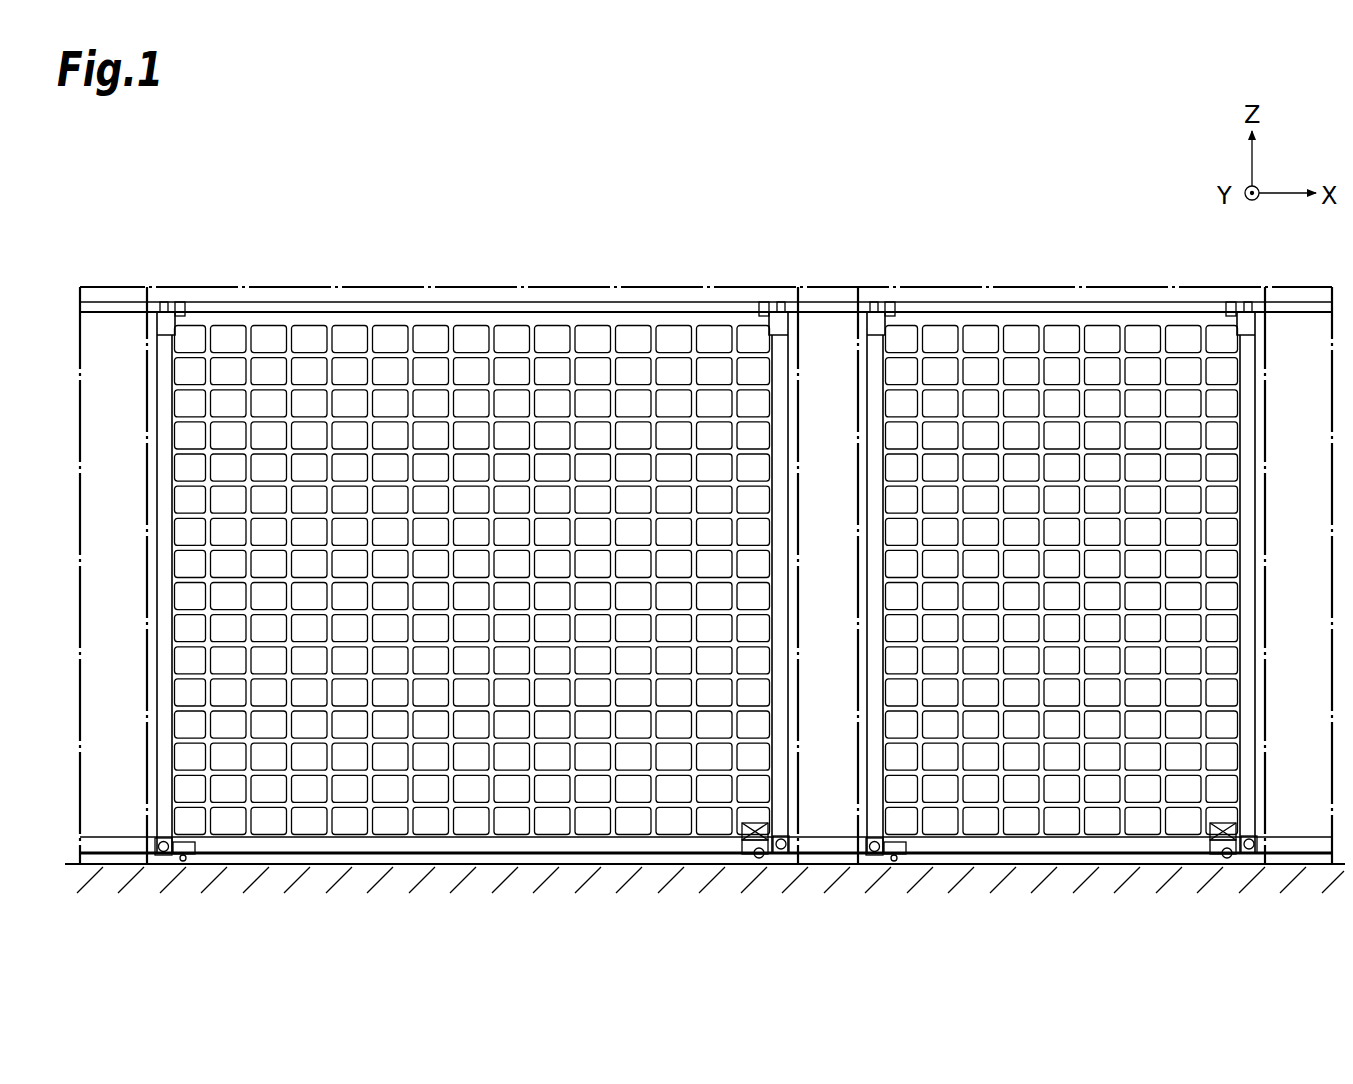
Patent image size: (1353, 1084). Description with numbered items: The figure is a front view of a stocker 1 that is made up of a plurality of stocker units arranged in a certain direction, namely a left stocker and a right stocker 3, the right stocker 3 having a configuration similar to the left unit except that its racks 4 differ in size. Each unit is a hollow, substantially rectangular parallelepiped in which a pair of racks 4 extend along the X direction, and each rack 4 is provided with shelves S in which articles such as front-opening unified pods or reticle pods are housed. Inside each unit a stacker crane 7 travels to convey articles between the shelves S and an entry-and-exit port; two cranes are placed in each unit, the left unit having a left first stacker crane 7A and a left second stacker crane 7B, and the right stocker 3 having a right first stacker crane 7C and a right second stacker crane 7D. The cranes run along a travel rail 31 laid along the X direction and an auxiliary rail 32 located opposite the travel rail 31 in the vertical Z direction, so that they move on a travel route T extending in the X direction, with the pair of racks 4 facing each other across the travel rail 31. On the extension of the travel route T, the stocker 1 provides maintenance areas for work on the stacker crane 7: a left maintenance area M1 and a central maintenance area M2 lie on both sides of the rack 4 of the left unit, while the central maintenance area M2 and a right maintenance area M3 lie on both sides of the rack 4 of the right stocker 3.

The stocker 1 is at (181, 206).
The right stocker 3 is at (339, 285).
The travel rail 31 is at (405, 856).
The auxiliary rail 32 is at (443, 306).
The rack 4 is at (634, 322).
The shelf S is at (597, 383).
The stacker crane 7 is at (709, 886).
The left first stacker crane 7A is at (193, 866).
The left second stacker crane 7B is at (750, 865).
The right first stacker crane 7C is at (905, 866).
The right second stacker crane 7D is at (1222, 865).
The travel route T is at (507, 865).
The left maintenance area M1 is at (135, 578).
The central maintenance area M2 is at (848, 578).
The right maintenance area M3 is at (1320, 578).